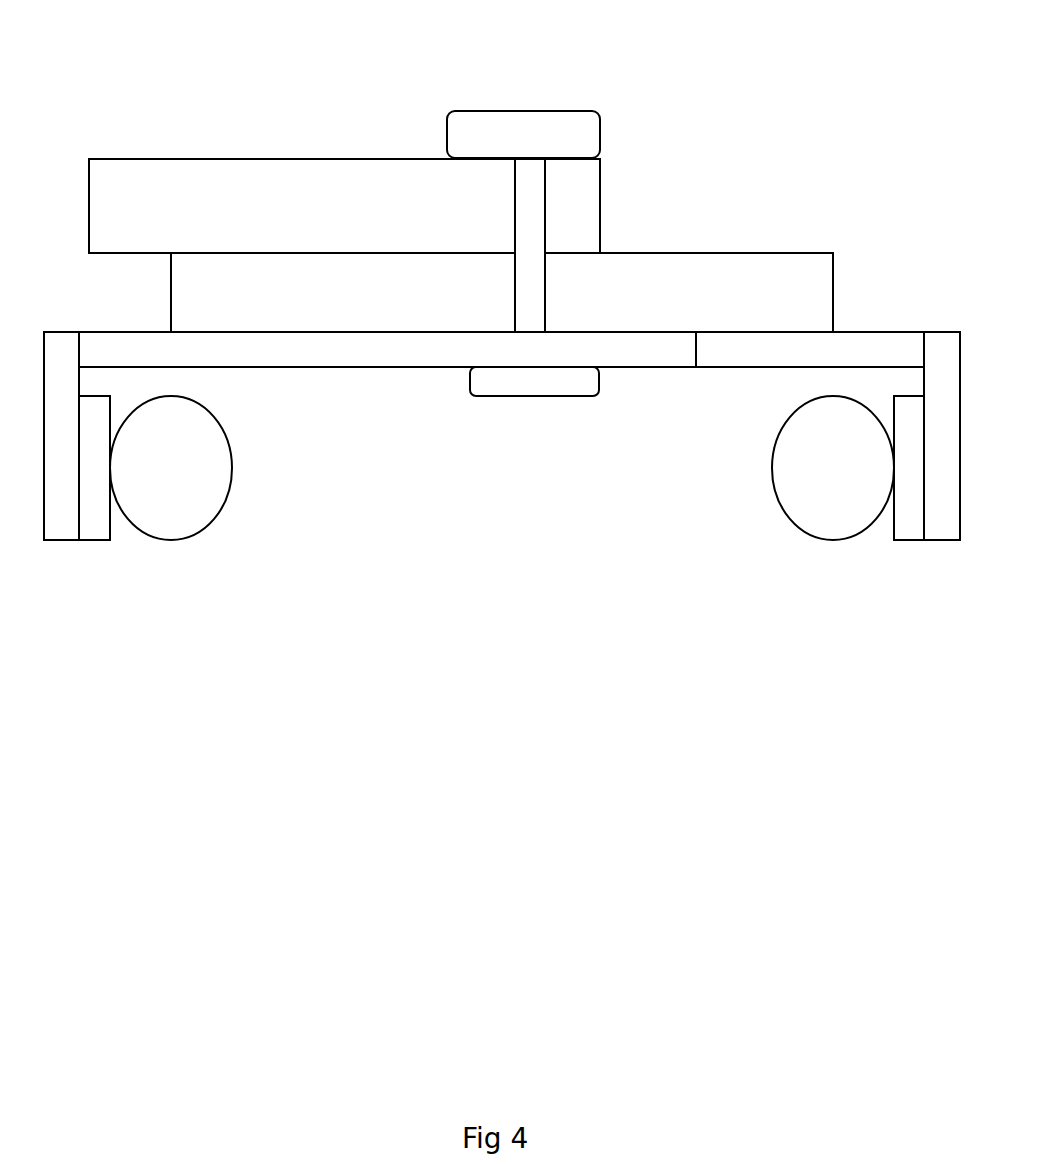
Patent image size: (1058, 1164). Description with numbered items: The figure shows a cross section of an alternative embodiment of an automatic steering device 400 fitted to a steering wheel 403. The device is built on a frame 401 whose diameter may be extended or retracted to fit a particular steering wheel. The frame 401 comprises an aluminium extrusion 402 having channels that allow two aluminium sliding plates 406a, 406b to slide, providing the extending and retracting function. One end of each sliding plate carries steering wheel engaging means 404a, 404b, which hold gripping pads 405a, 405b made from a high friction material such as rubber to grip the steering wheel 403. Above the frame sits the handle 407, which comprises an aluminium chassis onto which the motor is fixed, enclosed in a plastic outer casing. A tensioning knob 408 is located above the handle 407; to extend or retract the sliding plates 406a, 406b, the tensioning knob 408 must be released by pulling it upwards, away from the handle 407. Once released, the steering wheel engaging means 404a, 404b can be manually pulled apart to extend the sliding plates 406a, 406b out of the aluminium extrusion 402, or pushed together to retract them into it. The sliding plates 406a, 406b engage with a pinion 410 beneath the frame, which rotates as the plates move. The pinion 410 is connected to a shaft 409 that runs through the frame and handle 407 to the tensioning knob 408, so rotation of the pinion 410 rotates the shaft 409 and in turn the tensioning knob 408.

The automatic steering device 400 is at (502, 328).
The frame 401 is at (500, 266).
The aluminium extrusion 402 is at (506, 260).
The steering wheel 403 is at (502, 497).
The steering wheel engaging means 404a is at (83, 474).
The steering wheel engaging means 404b is at (920, 494).
The gripping pad 405a is at (132, 520).
The gripping pad 405b is at (880, 517).
The sliding plate 406a is at (380, 315).
The sliding plate 406b is at (810, 310).
The handle 407 is at (344, 162).
The tensioning knob 408 is at (523, 92).
The shaft 409 is at (562, 245).
The pinion 410 is at (546, 432).